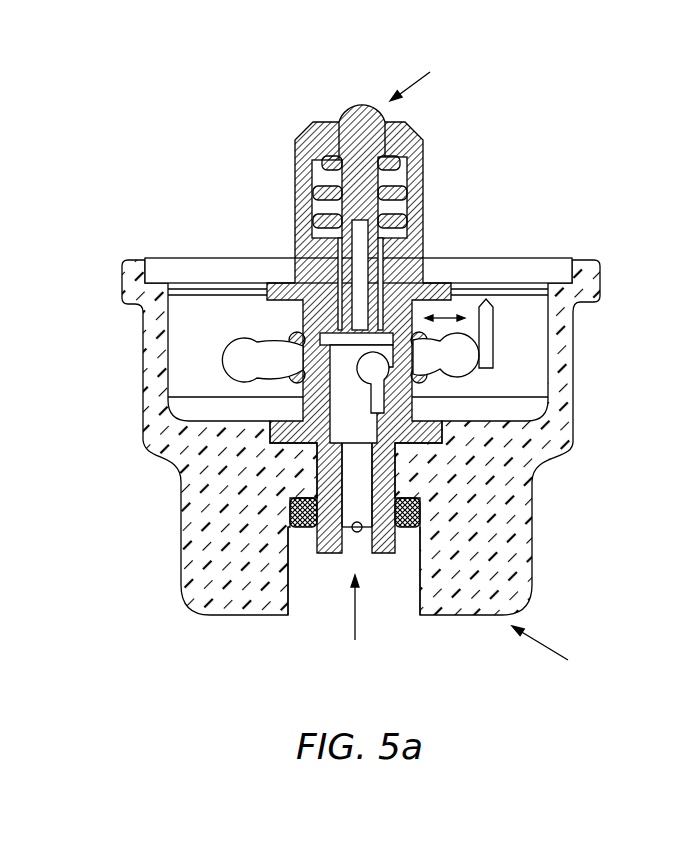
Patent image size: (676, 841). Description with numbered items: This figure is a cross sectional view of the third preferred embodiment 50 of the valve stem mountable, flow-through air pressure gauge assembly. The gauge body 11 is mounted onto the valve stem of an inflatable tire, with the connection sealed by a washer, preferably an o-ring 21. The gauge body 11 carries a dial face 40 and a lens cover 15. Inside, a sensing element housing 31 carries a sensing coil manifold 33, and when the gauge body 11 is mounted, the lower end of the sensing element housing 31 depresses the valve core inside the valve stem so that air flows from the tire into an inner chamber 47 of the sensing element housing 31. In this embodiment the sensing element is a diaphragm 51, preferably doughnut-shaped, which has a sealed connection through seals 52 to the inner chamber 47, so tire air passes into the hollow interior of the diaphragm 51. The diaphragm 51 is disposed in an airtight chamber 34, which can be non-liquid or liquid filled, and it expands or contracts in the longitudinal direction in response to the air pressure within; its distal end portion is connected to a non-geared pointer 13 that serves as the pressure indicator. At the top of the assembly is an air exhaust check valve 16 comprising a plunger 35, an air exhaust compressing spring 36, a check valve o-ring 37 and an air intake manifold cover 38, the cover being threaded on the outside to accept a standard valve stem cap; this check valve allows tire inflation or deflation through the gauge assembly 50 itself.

The gauge body 11 is at (147, 327).
The pointer 13 is at (490, 315).
The lens cover 15 is at (246, 262).
The air exhaust check valve 16 is at (419, 76).
The o-ring 21 is at (296, 528).
The sensing element housing 31 is at (317, 452).
The sensing coil manifold 33 is at (423, 240).
The airtight chamber 34 is at (202, 358).
The plunger 35 is at (346, 106).
The air exhaust compressing spring 36 is at (423, 194).
The check valve o-ring 37 is at (424, 143).
The air intake manifold cover 38 is at (296, 150).
The dial face 40 is at (212, 292).
The inner chamber 47 is at (357, 460).
The third preferred embodiment of the air pressure gauge assembly 50 is at (332, 371).
The diaphragm 51 is at (227, 370).
The seals 52 is at (288, 375).